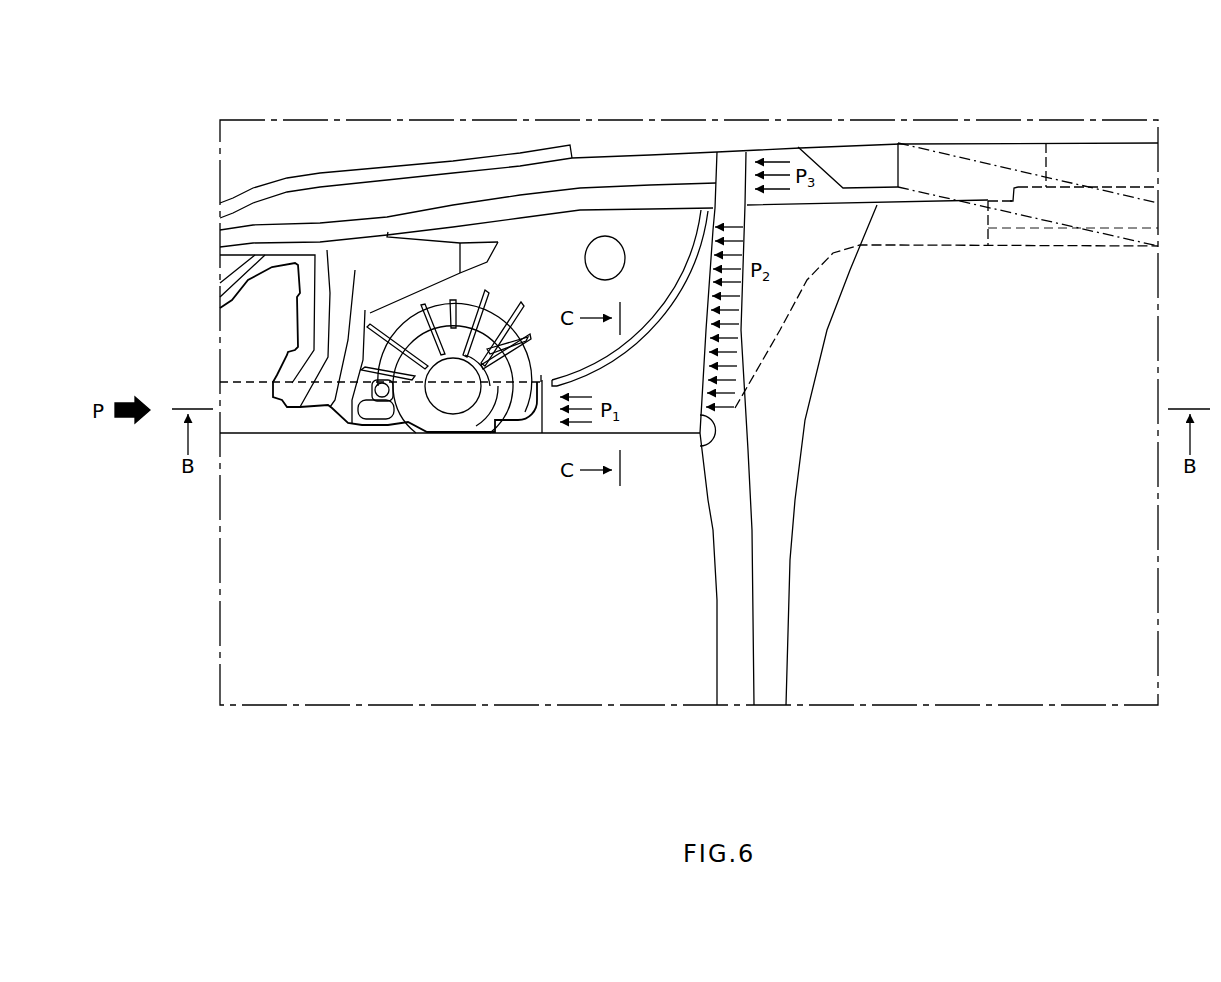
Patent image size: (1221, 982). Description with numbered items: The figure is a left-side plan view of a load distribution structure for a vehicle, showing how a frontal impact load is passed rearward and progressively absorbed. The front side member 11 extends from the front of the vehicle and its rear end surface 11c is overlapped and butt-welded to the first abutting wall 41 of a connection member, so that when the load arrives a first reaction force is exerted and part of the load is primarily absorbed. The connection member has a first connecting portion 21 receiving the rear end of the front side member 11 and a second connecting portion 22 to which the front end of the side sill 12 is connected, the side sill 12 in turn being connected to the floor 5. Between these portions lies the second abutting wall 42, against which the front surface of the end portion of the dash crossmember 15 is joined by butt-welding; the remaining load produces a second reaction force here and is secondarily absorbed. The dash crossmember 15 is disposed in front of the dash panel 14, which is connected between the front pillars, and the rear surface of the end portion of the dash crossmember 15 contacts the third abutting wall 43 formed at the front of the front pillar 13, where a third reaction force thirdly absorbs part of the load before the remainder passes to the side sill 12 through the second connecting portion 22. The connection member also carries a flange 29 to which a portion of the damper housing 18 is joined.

The floor 5 is at (1148, 537).
The front side member 11 is at (275, 420).
The rear end surface 11c is at (549, 424).
The side sill 12 is at (1103, 158).
The front pillar 13 is at (778, 147).
The dash panel 14 is at (780, 590).
The dash crossmember 15 is at (735, 690).
The damper housing 18 is at (465, 157).
The first connecting portion 21 is at (543, 372).
The second connecting portion 22 is at (984, 256).
The flange 29 is at (685, 265).
The first abutting wall 41 is at (532, 418).
The second abutting wall 42 is at (706, 445).
The third abutting wall 43 is at (748, 180).